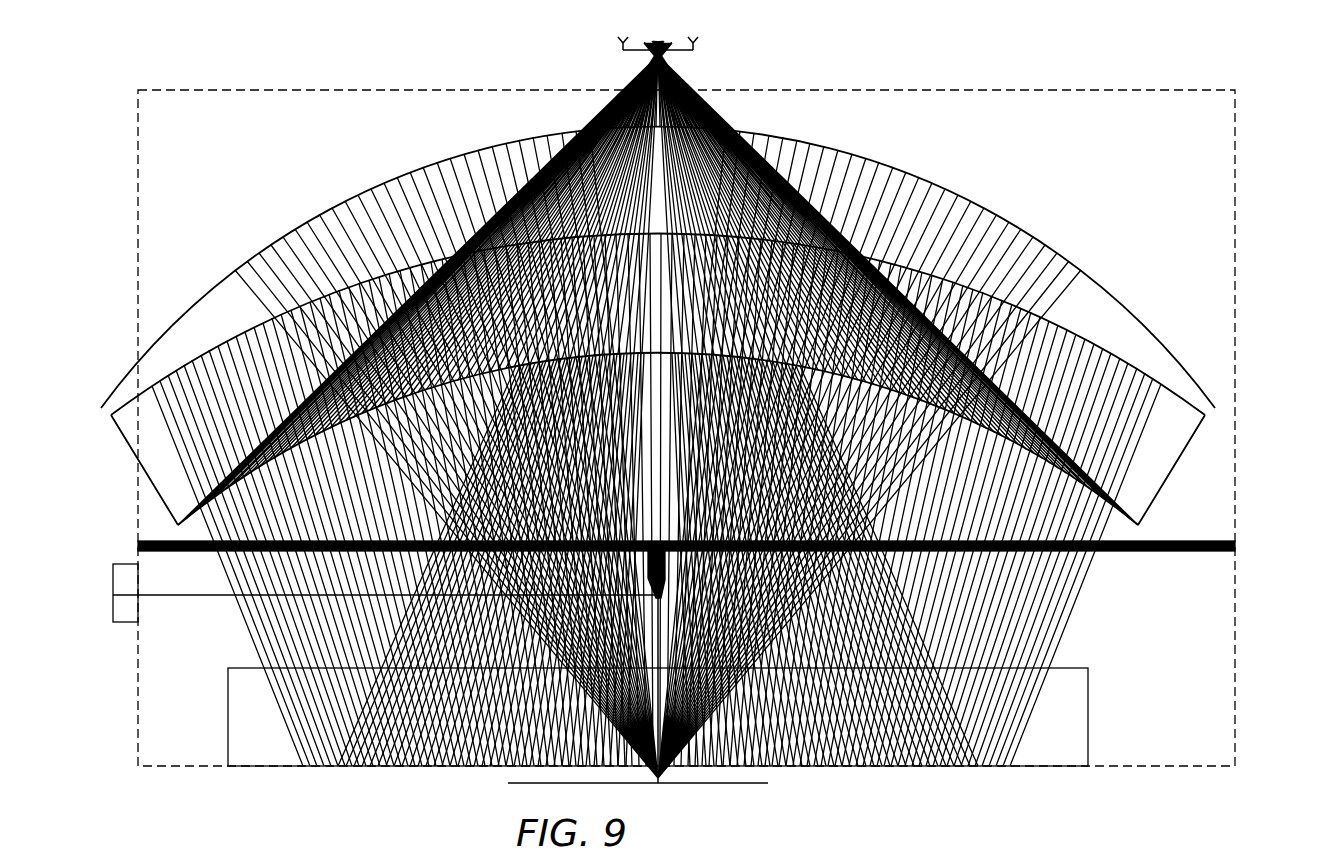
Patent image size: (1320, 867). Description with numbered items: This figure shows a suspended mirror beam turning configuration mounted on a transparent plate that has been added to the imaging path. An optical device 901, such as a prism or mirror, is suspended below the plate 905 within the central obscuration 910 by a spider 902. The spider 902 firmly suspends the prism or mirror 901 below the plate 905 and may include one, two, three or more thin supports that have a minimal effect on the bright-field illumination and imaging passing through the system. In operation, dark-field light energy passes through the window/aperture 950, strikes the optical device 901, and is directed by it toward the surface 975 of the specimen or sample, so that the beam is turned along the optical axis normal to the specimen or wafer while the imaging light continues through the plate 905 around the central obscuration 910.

The optical device 901 is at (660, 585).
The spider 902 is at (645, 588).
The plate 905 is at (130, 538).
The central obscuration 910 is at (654, 486).
The window/aperture 950 is at (125, 616).
The surface 975 is at (658, 798).